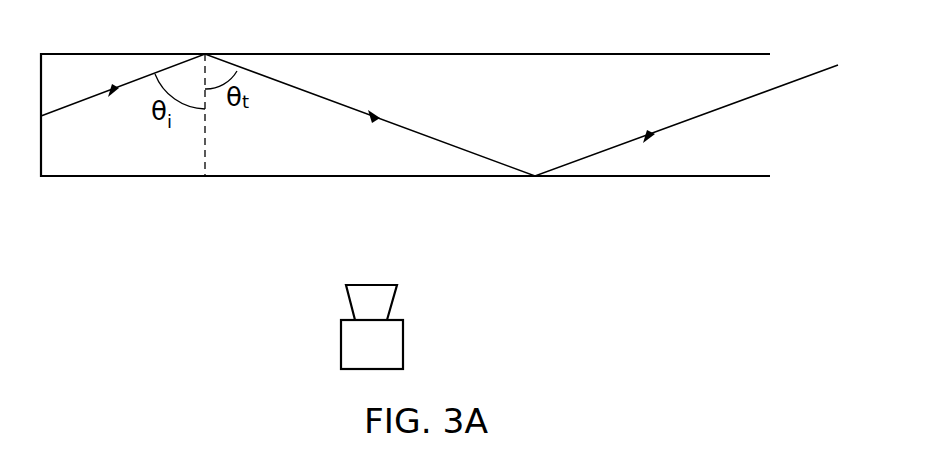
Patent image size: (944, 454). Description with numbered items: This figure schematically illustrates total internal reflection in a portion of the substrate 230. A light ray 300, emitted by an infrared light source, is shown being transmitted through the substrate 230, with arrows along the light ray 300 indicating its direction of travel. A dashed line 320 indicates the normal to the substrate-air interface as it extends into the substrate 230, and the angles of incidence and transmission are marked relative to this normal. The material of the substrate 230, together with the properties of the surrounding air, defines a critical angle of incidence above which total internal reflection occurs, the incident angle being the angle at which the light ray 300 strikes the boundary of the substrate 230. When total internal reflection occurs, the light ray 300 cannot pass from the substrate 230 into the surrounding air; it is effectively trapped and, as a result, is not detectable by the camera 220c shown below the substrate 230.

The substrate 230 is at (692, 176).
The light ray 300 is at (425, 135).
The dashed line 320 is at (205, 155).
The camera 220c is at (403, 352).